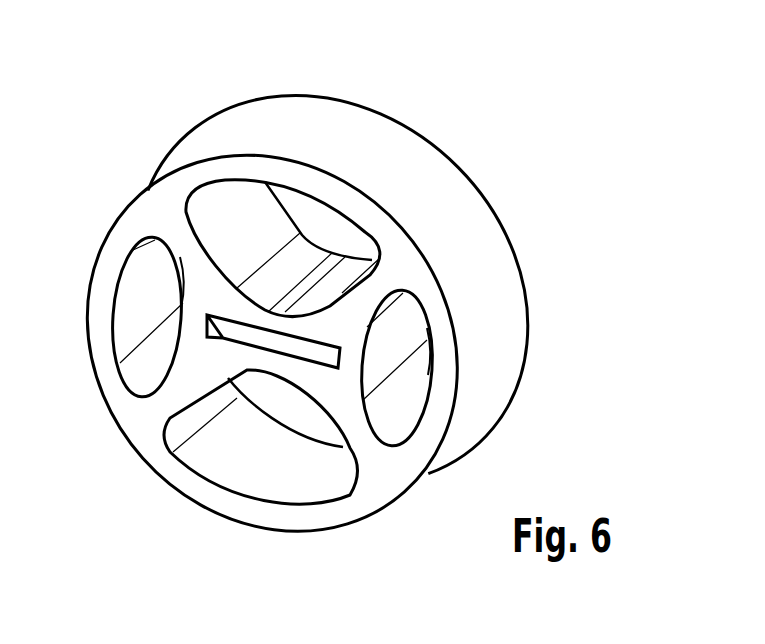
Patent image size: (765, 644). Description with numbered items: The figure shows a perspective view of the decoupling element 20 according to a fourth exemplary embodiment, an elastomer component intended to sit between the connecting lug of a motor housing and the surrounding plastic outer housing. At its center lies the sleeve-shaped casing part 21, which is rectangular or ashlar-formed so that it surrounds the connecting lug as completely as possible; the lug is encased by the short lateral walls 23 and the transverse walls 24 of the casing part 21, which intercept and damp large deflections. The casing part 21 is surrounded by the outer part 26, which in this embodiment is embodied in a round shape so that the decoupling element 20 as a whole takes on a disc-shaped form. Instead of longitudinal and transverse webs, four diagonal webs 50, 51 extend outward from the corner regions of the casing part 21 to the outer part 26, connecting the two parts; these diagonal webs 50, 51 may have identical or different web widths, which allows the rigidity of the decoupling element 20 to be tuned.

The decoupling element 20 is at (471, 196).
The casing part 21 is at (261, 472).
The short lateral walls 23 is at (353, 362).
The transverse walls 24 is at (277, 364).
The outer part 26 is at (341, 193).
The diagonal web 50 is at (187, 243).
The diagonal web 51 is at (177, 397).